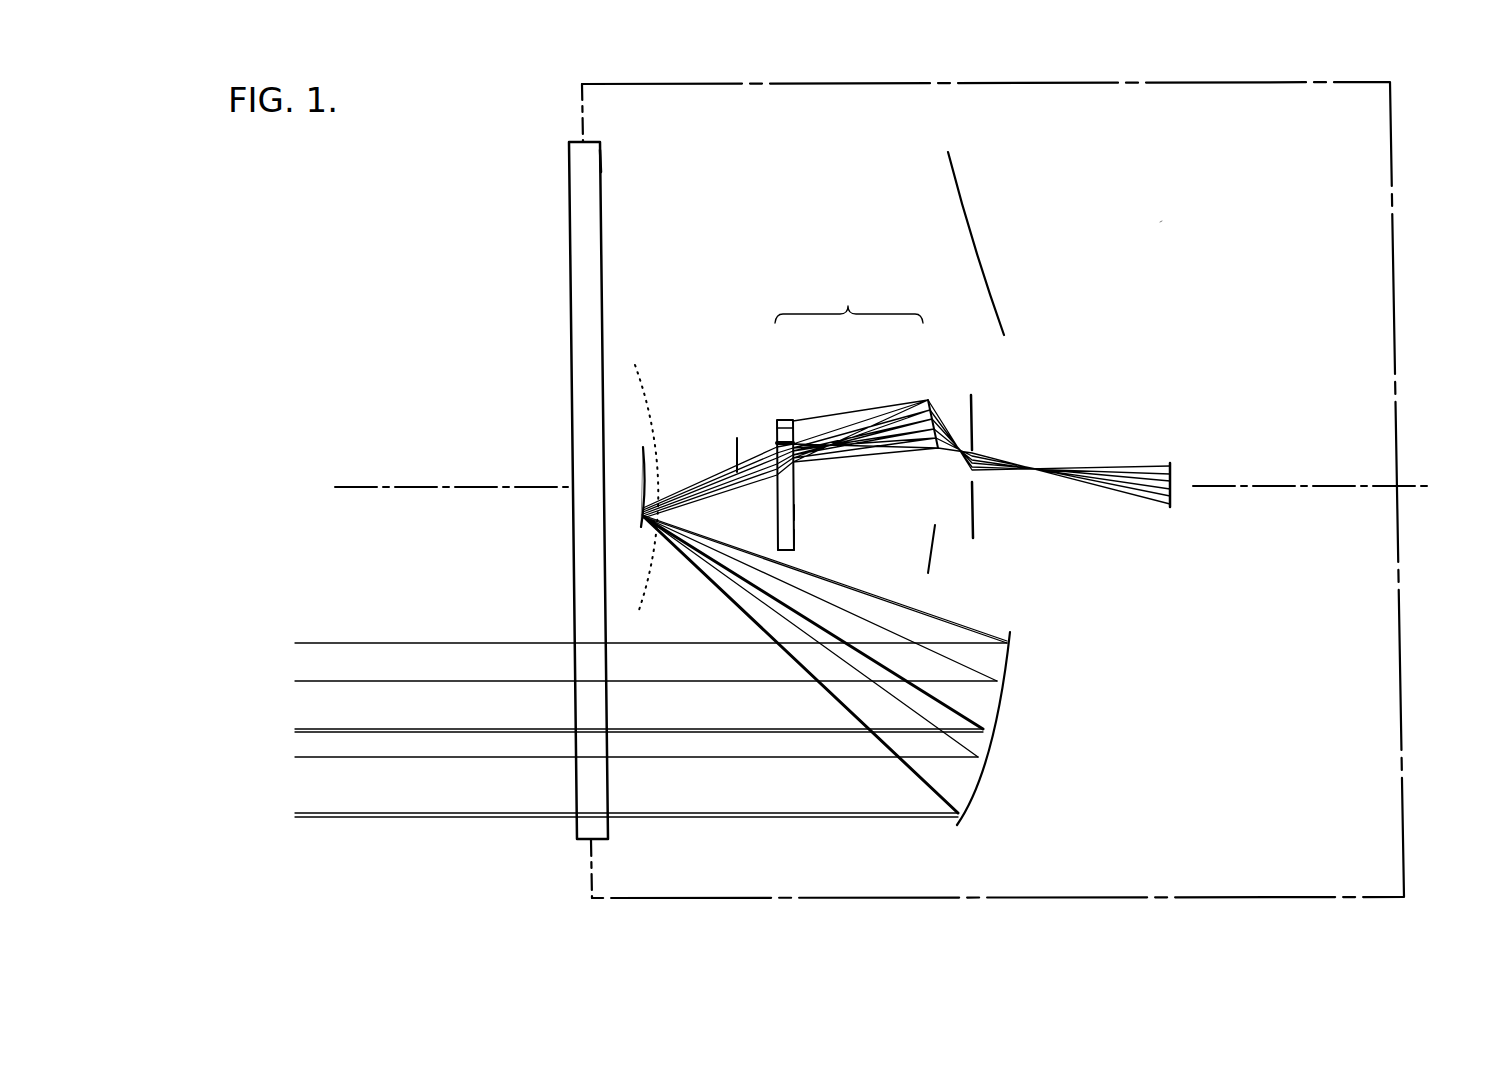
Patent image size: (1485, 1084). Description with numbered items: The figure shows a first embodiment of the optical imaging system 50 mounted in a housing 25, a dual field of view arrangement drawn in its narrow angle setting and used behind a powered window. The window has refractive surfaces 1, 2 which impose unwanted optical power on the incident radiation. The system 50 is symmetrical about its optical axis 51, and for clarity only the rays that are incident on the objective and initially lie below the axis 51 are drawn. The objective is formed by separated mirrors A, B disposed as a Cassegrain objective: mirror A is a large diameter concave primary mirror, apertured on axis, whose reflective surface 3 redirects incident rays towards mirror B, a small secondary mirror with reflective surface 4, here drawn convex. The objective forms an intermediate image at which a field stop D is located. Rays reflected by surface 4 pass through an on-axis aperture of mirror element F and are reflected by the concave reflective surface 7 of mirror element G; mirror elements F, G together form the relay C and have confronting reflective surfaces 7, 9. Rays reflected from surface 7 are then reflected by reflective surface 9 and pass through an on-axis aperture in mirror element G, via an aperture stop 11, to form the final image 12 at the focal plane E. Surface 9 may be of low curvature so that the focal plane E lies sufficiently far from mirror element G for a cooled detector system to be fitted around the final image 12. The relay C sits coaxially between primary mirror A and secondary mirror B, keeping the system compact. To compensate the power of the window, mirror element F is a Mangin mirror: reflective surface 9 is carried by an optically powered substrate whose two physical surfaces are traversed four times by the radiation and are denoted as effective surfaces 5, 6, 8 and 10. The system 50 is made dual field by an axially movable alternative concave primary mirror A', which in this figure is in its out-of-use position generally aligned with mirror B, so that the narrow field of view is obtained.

The refractive surface 1 is at (569, 183).
The refractive surface 2 is at (601, 157).
The reflective surface 3 is at (951, 165).
The reflective surface 4 is at (646, 462).
The effective surface 5 is at (777, 500).
The effective surface 6 is at (796, 492).
The reflective surface 7 is at (923, 540).
The effective surface 8 is at (796, 514).
The reflective surface 9 is at (806, 552).
The effective surface 10 is at (796, 538).
The aperture stop 11 is at (981, 439).
The final image 12 is at (1174, 482).
The housing 25 is at (1193, 78).
The optical imaging system 50 is at (1163, 220).
The optical axis 51 is at (366, 483).
The primary mirror A is at (954, 459).
The alternative concave primary mirror A' is at (665, 451).
The secondary mirror B is at (634, 427).
The relay C is at (849, 301).
The field stop D is at (736, 427).
The focal plane E is at (1211, 444).
The mirror element F is at (762, 443).
The mirror element G is at (928, 388).